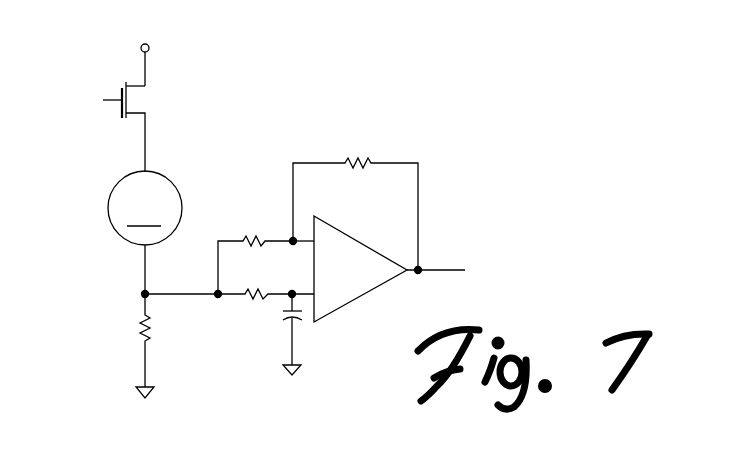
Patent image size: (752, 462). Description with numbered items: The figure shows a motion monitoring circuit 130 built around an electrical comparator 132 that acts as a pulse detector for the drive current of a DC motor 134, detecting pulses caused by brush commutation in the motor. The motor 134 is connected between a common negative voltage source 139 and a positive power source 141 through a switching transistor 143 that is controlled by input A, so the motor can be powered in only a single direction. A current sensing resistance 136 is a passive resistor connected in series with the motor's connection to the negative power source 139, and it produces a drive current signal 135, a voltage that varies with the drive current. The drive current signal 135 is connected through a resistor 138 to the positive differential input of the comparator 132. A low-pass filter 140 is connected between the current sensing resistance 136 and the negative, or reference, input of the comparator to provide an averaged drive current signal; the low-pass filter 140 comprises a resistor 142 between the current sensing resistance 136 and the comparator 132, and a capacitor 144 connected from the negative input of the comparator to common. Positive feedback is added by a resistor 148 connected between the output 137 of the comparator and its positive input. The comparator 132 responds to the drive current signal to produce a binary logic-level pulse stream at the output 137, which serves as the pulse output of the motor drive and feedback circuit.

The motion monitoring circuit 130 is at (312, 97).
The electrical comparator 132 is at (318, 228).
The DC motor 134 is at (165, 179).
The drive current signal 135 is at (160, 293).
The current sensing resistance 136 is at (150, 321).
The output 137 is at (445, 268).
The resistor 138 is at (244, 236).
The common negative voltage source 139 is at (140, 393).
The low-pass filter 140 is at (245, 324).
The positive power source 141 is at (142, 43).
The resistor 142 is at (252, 290).
The switching transistor 143 is at (120, 92).
The capacitor 144 is at (295, 326).
The resistor 148 is at (366, 161).